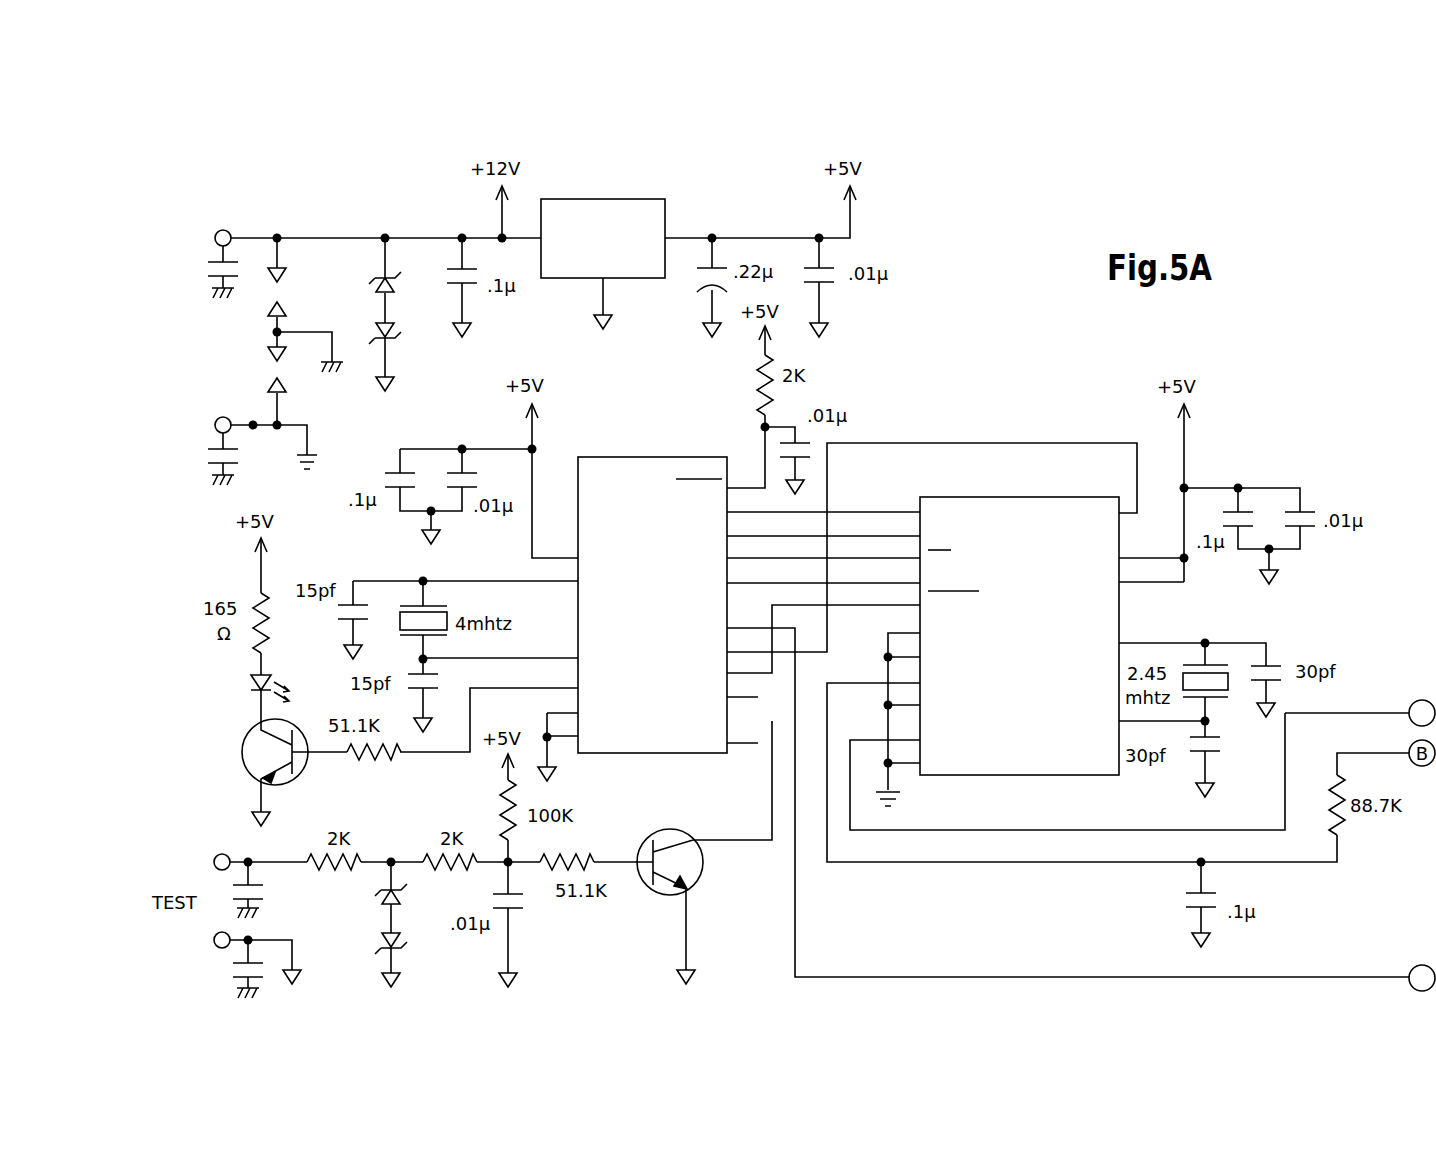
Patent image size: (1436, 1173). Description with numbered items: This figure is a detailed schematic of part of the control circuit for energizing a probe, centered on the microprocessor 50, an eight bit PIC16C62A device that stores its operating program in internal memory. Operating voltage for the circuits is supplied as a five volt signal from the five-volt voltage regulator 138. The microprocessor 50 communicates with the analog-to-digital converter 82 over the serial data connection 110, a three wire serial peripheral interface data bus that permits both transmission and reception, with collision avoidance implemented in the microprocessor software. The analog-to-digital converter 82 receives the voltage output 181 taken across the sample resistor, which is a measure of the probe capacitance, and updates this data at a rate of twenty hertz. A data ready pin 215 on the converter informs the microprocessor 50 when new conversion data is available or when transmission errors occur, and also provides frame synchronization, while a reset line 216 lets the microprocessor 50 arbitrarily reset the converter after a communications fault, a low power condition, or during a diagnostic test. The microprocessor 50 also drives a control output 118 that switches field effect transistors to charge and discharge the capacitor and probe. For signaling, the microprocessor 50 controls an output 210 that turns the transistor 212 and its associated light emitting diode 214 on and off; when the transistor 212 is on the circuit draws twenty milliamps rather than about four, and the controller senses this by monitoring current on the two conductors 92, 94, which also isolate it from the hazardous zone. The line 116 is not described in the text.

The conductor 94 is at (224, 229).
The conductor 92 is at (220, 417).
The five-volt voltage regulator 138 is at (615, 211).
The microprocessor 50 is at (622, 485).
The serial data connection 110 is at (853, 535).
The analog-to-digital converter 82 is at (1002, 517).
The reset line 216 is at (1077, 443).
The data ready pin 215 is at (873, 602).
The voltage output 181 is at (1365, 712).
The light emitting diode 214 is at (252, 683).
The transistor 212 is at (243, 748).
The output 210 is at (430, 757).
The analog input line 116 is at (930, 830).
The control output 118 is at (995, 977).